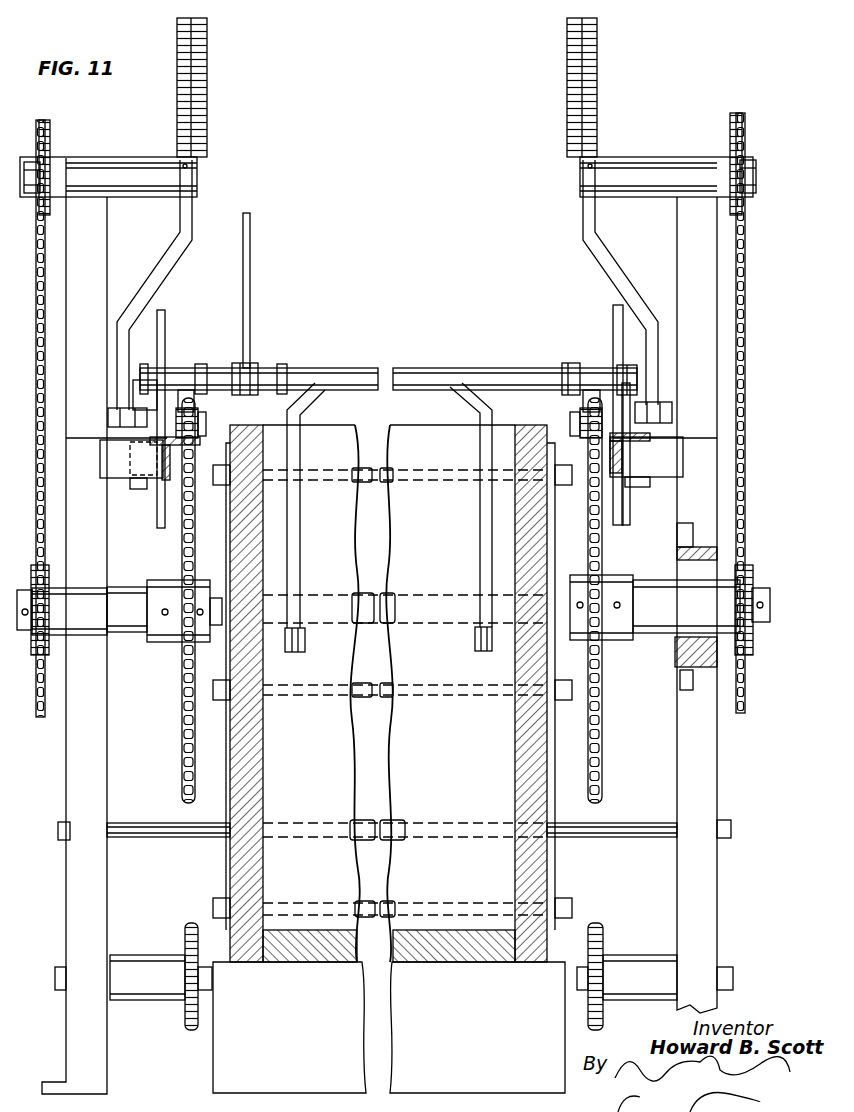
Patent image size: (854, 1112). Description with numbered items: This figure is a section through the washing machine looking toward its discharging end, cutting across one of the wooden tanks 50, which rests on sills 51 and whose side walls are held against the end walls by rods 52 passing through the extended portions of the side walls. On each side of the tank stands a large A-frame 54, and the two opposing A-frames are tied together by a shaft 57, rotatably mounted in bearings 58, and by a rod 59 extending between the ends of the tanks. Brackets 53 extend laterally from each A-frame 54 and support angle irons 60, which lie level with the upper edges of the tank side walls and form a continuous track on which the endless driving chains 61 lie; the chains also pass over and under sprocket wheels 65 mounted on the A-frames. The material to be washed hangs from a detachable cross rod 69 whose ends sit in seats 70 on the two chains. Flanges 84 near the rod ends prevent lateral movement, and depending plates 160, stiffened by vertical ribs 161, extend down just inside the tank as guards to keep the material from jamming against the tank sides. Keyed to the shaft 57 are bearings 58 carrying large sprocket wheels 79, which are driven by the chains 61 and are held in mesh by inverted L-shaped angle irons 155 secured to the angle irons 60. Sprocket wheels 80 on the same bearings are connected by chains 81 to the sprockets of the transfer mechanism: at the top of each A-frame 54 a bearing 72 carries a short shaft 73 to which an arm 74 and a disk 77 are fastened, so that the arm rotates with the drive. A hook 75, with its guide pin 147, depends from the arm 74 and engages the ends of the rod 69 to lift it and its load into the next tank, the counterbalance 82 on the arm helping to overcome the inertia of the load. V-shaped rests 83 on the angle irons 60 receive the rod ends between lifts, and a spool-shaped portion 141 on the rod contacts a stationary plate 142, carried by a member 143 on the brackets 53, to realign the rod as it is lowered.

The tank 50 is at (320, 440).
The sill 51 is at (235, 1052).
The rod 52 is at (393, 478).
The bracket 53 is at (107, 468).
The A-frame 54 is at (85, 243).
The shaft 57 is at (395, 606).
The bearing 58 is at (120, 595).
The rod 59 is at (612, 840).
The angle iron 60 is at (195, 446).
The chain 61 is at (200, 421).
The sprocket wheel 65 is at (190, 925).
The cross rod 69 is at (437, 376).
The seat 70 is at (205, 435).
The bearing 72 is at (110, 170).
The short shaft 73 is at (28, 178).
The arm 74 is at (188, 222).
The hook 75 is at (132, 428).
The disk 77 is at (47, 147).
The large sprocket wheel 79 is at (182, 722).
The sprocket wheel 80 is at (38, 655).
The chain 81 is at (38, 385).
The counterbalance 82 is at (193, 90).
The rest 83 is at (612, 317).
The flange 84 is at (200, 372).
The spool-shaped portion 141 is at (252, 368).
The stationary plate 142 is at (250, 305).
The member 143 is at (135, 386).
The pin 147 is at (158, 500).
The inverted L-shaped angle iron 155 is at (184, 393).
The depending plate 160 is at (488, 651).
The strengthening rib 161 is at (478, 507).